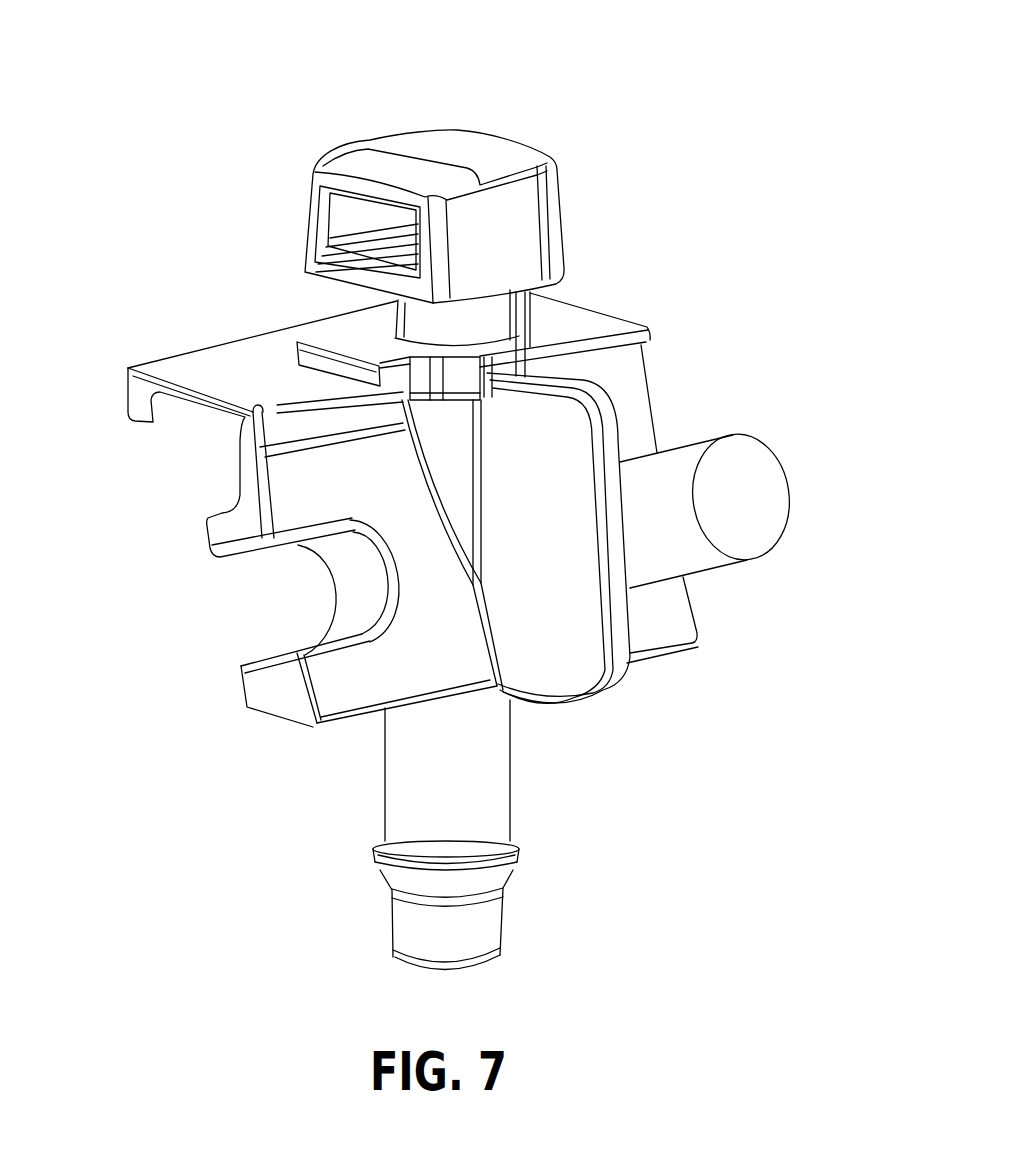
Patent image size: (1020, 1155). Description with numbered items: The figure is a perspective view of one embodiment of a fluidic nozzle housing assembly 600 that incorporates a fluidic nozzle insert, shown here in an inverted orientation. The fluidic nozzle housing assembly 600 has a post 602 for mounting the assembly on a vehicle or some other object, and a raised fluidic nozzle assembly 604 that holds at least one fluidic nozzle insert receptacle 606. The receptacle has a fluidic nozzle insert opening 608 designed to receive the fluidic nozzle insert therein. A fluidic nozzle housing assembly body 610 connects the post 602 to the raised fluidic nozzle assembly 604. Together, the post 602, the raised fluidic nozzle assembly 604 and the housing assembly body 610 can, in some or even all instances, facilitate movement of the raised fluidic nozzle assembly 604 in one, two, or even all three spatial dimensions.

The fluidic nozzle housing assembly 600 is at (178, 83).
The post 602 is at (468, 783).
The raised fluidic nozzle assembly 604 is at (662, 133).
The fluidic nozzle insert receptacle 606 is at (392, 227).
The fluidic nozzle insert opening 608 is at (367, 215).
The fluidic nozzle housing assembly body 610 is at (763, 335).